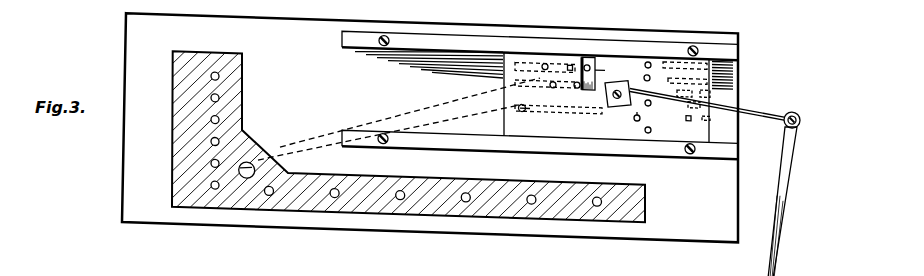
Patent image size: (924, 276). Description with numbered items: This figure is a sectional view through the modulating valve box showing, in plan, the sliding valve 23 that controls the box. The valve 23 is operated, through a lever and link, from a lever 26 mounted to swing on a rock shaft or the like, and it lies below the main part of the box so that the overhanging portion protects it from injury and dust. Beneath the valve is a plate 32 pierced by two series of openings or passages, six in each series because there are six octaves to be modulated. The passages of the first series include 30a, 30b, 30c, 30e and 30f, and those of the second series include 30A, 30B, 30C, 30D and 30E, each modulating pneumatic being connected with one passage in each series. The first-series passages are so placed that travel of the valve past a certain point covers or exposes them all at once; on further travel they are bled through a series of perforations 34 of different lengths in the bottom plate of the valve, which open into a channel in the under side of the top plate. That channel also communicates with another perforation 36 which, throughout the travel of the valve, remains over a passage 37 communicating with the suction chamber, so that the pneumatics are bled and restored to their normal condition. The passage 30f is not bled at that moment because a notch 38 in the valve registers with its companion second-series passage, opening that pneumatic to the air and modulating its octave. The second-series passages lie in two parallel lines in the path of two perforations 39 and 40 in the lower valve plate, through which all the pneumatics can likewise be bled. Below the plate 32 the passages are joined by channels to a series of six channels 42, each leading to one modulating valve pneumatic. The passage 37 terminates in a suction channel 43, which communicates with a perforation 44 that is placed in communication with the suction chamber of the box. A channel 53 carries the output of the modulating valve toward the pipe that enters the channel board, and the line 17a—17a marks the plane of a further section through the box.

The section line 17a is at (723, 101).
The sliding valve 23 is at (625, 44).
The lever 26 is at (770, 247).
The passage of the second series 30A is at (588, 38).
The passage of the second series 30B is at (588, 96).
The passage of the second series 30C is at (567, 30).
The passage of the second series 30D is at (547, 72).
The passage of the second series 30E is at (525, 13).
The passage of the first series 30a is at (650, 42).
The passage of the first series 30b is at (653, 54).
The passage of the first series 30c is at (625, 86).
The passage of the first series 30e is at (640, 121).
The passage of the first series 30f is at (648, 85).
The plate 32 is at (430, 127).
The perforations 34 is at (727, 29).
The perforation 36 is at (600, 80).
The passage 37 is at (476, 125).
The notch 38 is at (598, 52).
The perforation 39 is at (467, 19).
The perforation 40 is at (440, 56).
The channels 42 is at (395, 187).
The suction channel 43 is at (313, 133).
The perforation 44 is at (240, 167).
The channel 53 is at (211, 154).